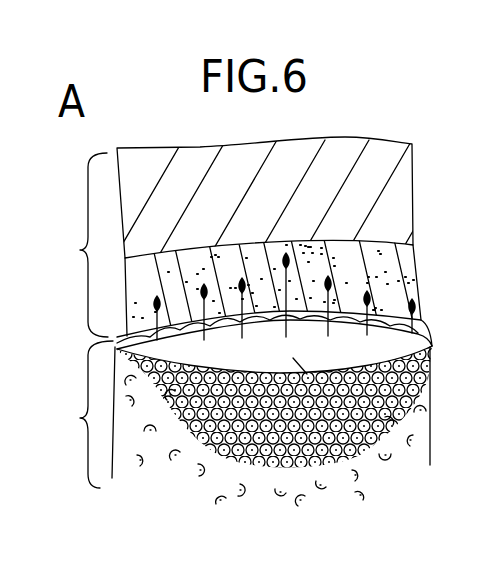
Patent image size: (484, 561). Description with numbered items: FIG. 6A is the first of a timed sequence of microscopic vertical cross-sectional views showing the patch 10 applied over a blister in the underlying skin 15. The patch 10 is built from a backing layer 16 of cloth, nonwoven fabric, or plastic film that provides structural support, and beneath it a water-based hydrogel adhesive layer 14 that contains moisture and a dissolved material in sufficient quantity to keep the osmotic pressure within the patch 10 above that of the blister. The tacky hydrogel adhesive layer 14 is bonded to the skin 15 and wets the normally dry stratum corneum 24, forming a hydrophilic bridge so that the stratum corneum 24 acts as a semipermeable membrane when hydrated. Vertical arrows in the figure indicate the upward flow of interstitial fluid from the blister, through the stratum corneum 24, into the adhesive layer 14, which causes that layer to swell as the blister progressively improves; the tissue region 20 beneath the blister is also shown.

The patch 10 is at (78, 245).
The hydrogel adhesive layer 14 is at (395, 265).
The skin 15 is at (241, 414).
The backing layer 16 is at (400, 168).
The wound tissue cells 20 is at (377, 448).
The stratum corneum 24 is at (398, 325).